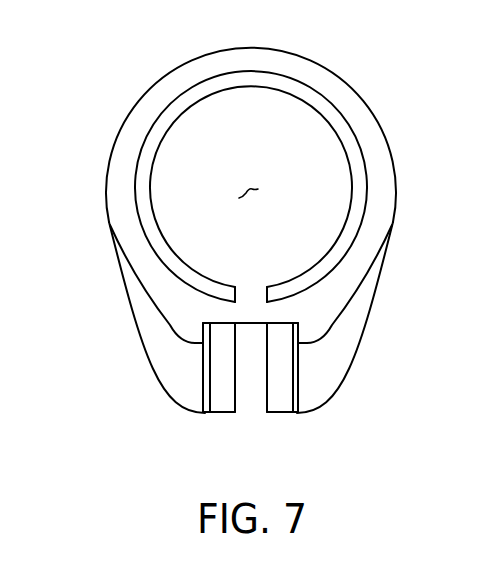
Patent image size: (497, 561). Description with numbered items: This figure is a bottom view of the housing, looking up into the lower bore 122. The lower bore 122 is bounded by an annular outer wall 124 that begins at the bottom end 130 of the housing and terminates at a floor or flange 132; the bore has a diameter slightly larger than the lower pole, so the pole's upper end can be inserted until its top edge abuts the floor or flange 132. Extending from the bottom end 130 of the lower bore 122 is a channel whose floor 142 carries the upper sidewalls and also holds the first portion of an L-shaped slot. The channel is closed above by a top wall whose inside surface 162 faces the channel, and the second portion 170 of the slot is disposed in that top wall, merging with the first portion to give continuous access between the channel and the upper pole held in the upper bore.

The lower bore 122 is at (247, 187).
The annular outer wall 124 is at (147, 85).
The bottom end 130 is at (122, 140).
The floor or flange 132 is at (155, 208).
The floor 142 is at (250, 325).
The inside surface 162 is at (223, 400).
The second portion 170 is at (255, 375).